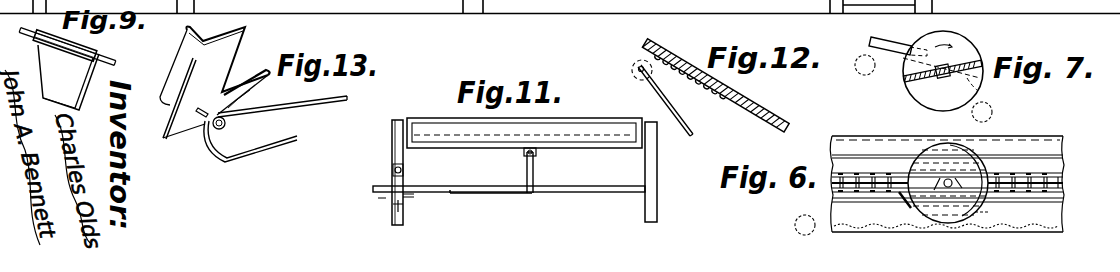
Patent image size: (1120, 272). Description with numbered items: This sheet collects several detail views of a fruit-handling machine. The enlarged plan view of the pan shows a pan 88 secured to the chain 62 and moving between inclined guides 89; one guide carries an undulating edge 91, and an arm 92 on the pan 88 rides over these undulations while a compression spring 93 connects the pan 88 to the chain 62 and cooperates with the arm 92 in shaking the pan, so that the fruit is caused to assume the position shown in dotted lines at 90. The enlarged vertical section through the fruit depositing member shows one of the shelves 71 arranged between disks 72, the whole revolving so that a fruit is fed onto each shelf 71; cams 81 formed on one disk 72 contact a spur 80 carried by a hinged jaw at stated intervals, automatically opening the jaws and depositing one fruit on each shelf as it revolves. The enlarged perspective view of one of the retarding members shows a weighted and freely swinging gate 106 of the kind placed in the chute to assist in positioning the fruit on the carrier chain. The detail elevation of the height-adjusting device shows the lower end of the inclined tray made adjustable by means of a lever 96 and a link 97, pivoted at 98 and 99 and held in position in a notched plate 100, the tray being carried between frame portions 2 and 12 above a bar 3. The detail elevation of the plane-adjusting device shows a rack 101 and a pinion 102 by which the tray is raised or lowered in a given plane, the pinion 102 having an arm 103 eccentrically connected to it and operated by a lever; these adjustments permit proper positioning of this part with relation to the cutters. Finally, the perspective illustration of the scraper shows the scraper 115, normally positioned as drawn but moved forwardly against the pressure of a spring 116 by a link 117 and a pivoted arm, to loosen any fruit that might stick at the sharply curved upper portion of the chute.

In FIG. 11, the frame side bar 2 is at (392, 137).
In FIG. 11, the cross bar 3 is at (573, 192).
In FIG. 11, the upright post 12 is at (652, 168).
In FIG. 6, the chain 62 is at (1062, 184).
In FIG. 7, the shelf 71 is at (908, 94).
In FIG. 7, the disk 72 is at (962, 43).
In FIG. 7, the spur 80 is at (889, 46).
In FIG. 7, the cam 81 is at (903, 68).
In FIG. 6, the pan 88 is at (970, 172).
In FIG. 6, the inclined guide 89 is at (1050, 151).
In FIG. 6, the fruit position 90 is at (963, 187).
In FIG. 6, the undulating edge 91 is at (838, 227).
In FIG. 6, the arm 92 is at (980, 214).
In FIG. 6, the compression spring 93 is at (900, 196).
In FIG. 11, the lever 96 is at (408, 196).
In FIG. 11, the link 97 is at (536, 173).
In FIG. 11, the pivot 98 is at (478, 189).
In FIG. 11, the pivot 99 is at (524, 156).
In FIG. 11, the notched plate 100 is at (395, 181).
In FIG. 12, the rack 101 is at (735, 95).
In FIG. 12, the pinion 102 is at (638, 80).
In FIG. 12, the arm 103 is at (693, 115).
In FIG. 9, the gate 106 is at (54, 61).
In FIG. 13, the scraper 115 is at (184, 60).
In FIG. 13, the spring 116 is at (251, 156).
In FIG. 13, the link 117 is at (272, 104).